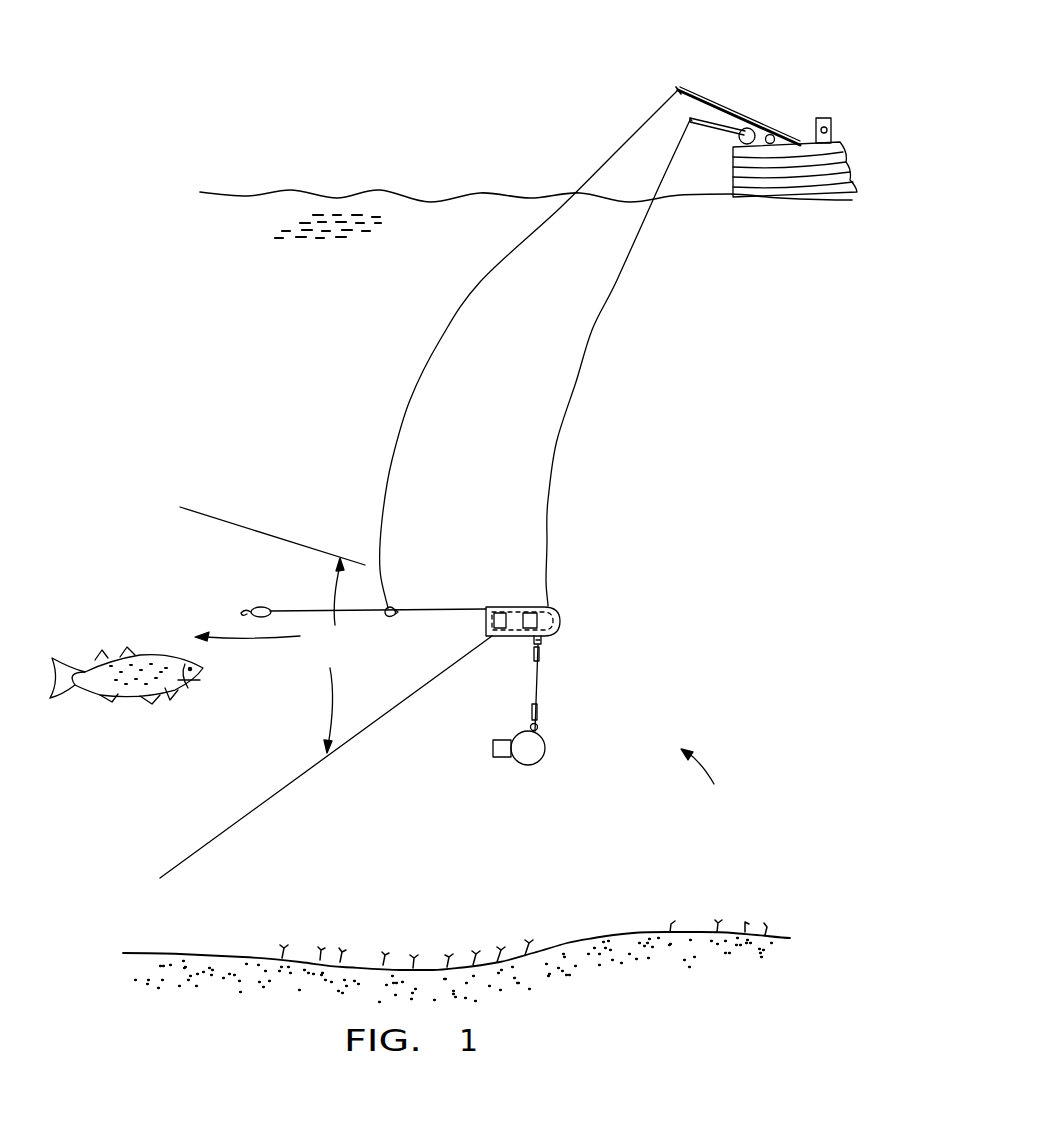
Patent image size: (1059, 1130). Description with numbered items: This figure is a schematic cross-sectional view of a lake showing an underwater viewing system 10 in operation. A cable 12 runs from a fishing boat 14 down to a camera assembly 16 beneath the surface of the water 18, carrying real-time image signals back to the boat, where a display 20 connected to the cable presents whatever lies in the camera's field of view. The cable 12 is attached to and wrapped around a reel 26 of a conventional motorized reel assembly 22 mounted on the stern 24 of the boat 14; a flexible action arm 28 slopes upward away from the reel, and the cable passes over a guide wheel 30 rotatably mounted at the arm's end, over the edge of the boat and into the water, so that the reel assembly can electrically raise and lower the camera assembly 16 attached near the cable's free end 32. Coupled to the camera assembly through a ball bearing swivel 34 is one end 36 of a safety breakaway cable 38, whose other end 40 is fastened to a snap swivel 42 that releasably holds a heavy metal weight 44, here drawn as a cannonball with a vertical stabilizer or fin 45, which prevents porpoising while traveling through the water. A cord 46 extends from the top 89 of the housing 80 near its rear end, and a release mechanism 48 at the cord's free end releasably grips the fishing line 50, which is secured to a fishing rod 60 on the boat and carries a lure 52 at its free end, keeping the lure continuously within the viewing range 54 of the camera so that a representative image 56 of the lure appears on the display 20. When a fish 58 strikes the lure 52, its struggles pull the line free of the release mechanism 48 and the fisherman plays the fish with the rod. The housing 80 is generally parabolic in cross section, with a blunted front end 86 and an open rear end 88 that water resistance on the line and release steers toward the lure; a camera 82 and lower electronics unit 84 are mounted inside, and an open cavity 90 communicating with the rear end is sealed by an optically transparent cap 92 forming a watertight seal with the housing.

The underwater viewing system 10 is at (713, 781).
The cable 12 is at (590, 340).
The fishing boat 14 is at (735, 192).
The camera assembly 16 is at (483, 648).
The water 18 is at (225, 304).
The display 20 is at (832, 118).
The motorized reel assembly 22 is at (751, 128).
The stern 24 is at (733, 168).
The reel 26 is at (771, 134).
The flexible action arm 28 is at (714, 133).
The guide wheel 30 is at (697, 121).
The free end 32 is at (547, 602).
The ball bearing swivel 34 is at (547, 645).
The one end 36 is at (534, 661).
The safety breakaway cable 38 is at (540, 672).
The other end 40 is at (537, 703).
The snap swivel 42 is at (537, 710).
The weight 44 is at (545, 743).
The vertical stabilizer or fin 45 is at (497, 758).
The cord 46 is at (413, 610).
The release mechanism 48 is at (387, 618).
The fishing line 50 is at (447, 325).
The lure 52 is at (262, 607).
The viewing range 54 is at (330, 655).
The image 56 is at (832, 131).
The fish 58 is at (138, 703).
The fishing rod 60 is at (712, 97).
The housing 80 is at (503, 637).
The camera 82 is at (487, 603).
The lower electronics unit 84 is at (530, 603).
The blunted front end 86 is at (557, 610).
The open rear end 88 is at (480, 637).
The top 89 is at (483, 608).
The open cavity 90 is at (552, 603).
The optically transparent cap 92 is at (482, 625).